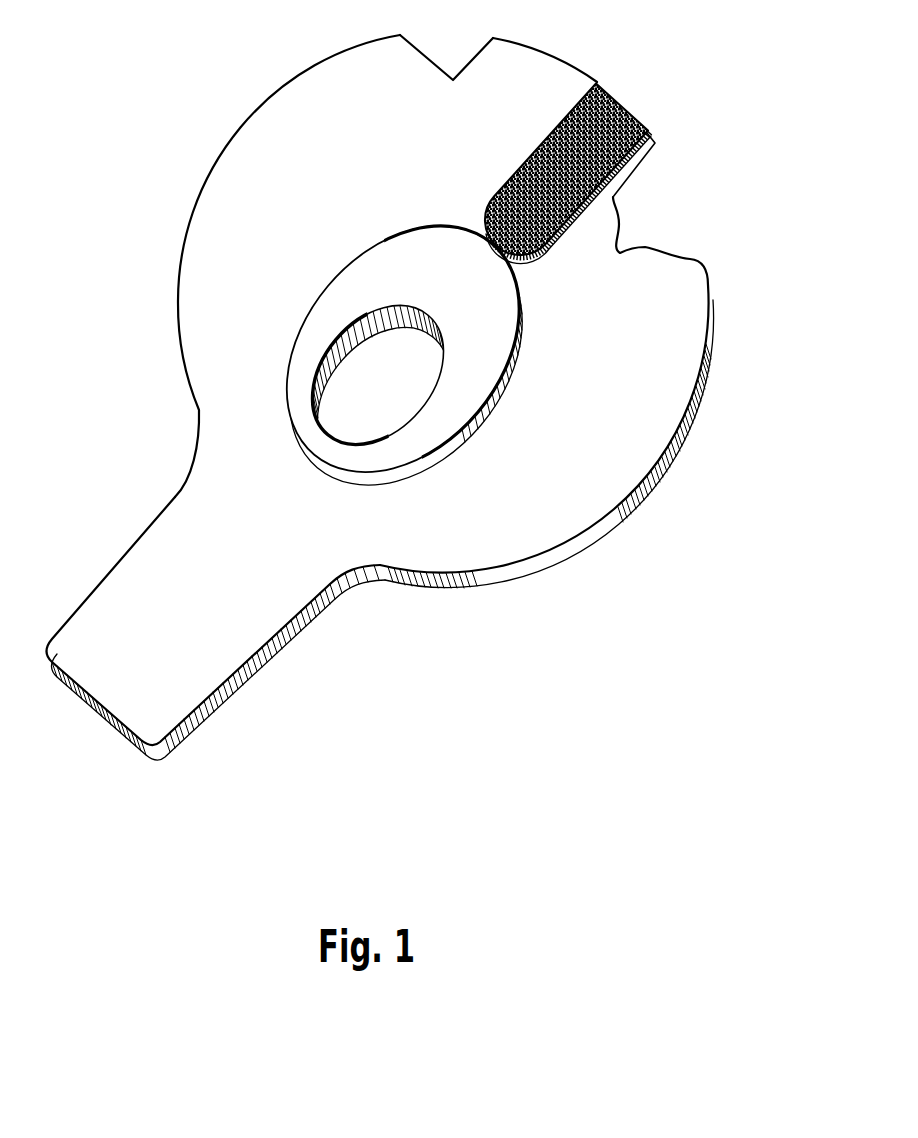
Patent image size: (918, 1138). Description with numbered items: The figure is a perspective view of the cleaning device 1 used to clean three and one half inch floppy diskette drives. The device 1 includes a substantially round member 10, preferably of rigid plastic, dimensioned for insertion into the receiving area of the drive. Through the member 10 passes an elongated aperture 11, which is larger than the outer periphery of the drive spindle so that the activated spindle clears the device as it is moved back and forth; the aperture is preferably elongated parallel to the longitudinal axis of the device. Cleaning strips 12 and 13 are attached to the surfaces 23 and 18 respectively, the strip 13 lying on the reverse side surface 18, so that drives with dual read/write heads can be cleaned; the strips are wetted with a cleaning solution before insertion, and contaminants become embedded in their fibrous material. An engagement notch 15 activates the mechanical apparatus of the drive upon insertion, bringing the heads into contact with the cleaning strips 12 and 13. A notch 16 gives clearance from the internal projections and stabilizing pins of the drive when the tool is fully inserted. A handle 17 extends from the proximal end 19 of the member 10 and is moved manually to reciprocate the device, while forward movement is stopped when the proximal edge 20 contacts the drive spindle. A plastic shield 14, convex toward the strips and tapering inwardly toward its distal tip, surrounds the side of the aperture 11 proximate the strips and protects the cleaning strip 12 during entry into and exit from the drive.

The device 1 is at (683, 500).
The round member 10 is at (684, 350).
The elongated aperture 11 is at (390, 383).
The cleaning strip 12 is at (603, 121).
The cleaning strip 13 is at (650, 172).
The shield 14 is at (404, 252).
The engagement notch 15 is at (683, 258).
The notch 16 is at (476, 55).
The handle 17 is at (197, 684).
The surface 18 is at (212, 163).
The proximal end 19 is at (196, 400).
The proximal edge 20 is at (340, 332).
The surface 23 is at (397, 143).